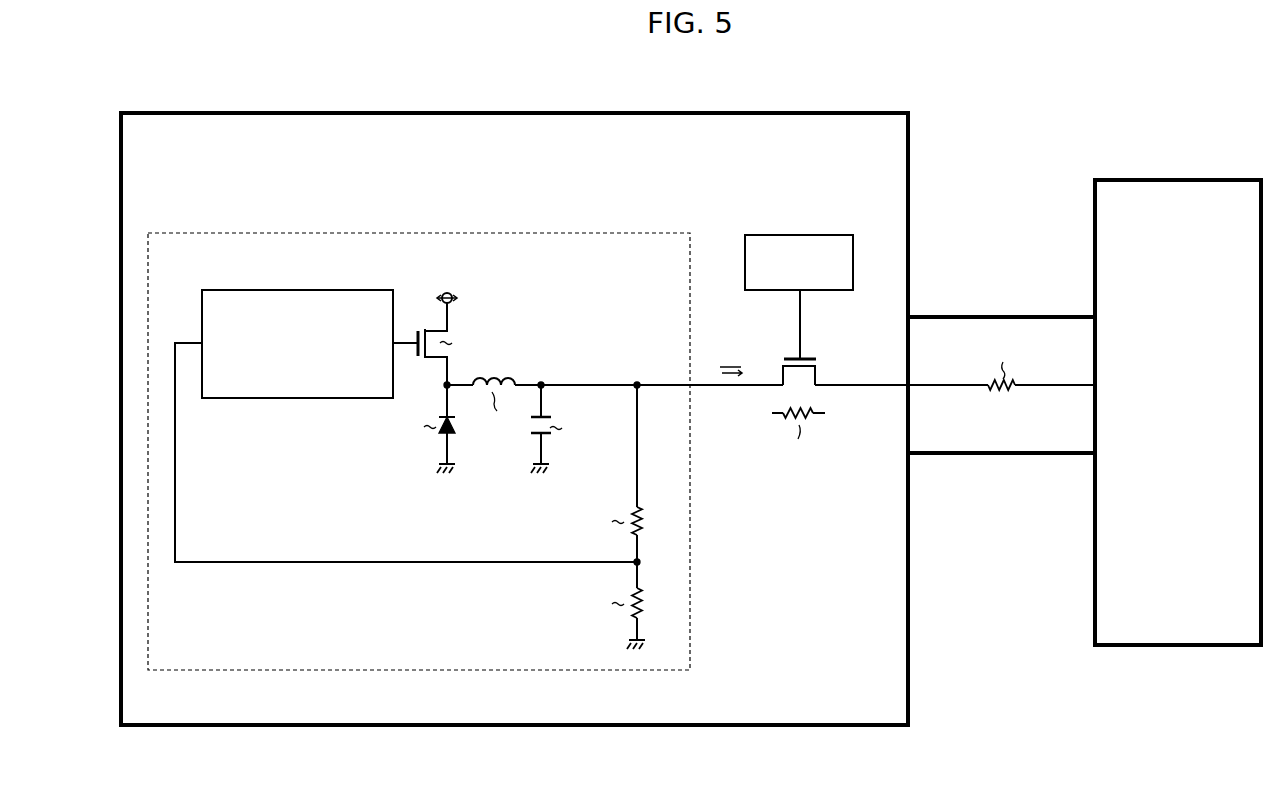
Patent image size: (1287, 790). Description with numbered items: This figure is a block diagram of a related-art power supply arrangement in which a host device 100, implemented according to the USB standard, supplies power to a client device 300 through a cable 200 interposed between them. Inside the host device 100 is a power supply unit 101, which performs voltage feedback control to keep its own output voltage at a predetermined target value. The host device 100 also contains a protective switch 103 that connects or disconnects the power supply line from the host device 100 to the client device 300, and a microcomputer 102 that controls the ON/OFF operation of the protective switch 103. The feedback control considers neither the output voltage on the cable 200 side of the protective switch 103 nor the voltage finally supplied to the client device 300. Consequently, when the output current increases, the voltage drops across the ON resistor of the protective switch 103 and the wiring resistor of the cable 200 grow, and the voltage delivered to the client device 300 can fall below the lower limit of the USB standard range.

The host device 100 is at (515, 111).
The power supply unit 101 is at (421, 233).
The microcomputer 102 is at (801, 235).
The protective switch 103 is at (832, 347).
The cable 200 is at (1005, 316).
The client device 300 is at (1183, 180).